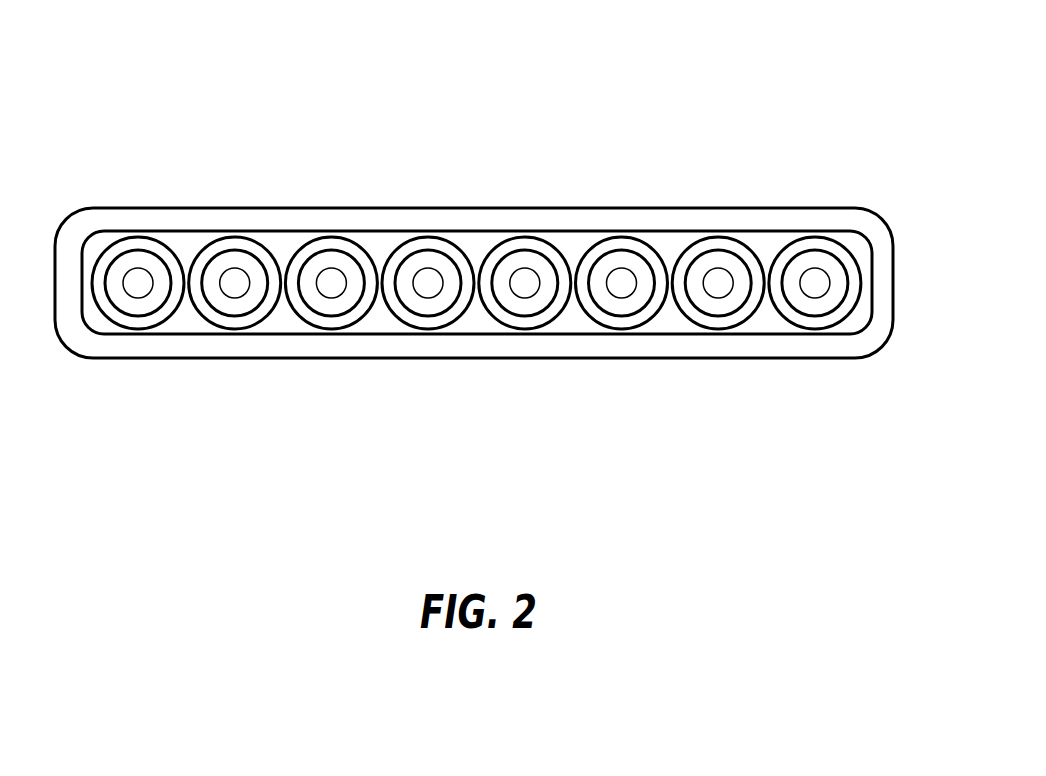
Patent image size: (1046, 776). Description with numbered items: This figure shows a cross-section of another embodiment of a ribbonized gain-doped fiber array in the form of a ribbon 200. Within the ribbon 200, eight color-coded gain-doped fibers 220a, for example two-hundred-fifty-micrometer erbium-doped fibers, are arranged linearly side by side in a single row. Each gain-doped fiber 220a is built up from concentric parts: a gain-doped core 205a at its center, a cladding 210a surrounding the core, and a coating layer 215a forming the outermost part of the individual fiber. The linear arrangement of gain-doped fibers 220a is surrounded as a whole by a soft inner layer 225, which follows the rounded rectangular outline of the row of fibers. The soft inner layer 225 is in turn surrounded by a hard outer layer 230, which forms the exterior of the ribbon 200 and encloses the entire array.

The ribbon 200 is at (779, 68).
The gain-doped core 205a is at (480, 212).
The cladding 210a is at (406, 259).
The coating layer 215a is at (549, 242).
The color-coded gain-doped fiber 220a is at (423, 297).
The soft inner layer 225 is at (279, 314).
The hard outer layer 230 is at (718, 360).